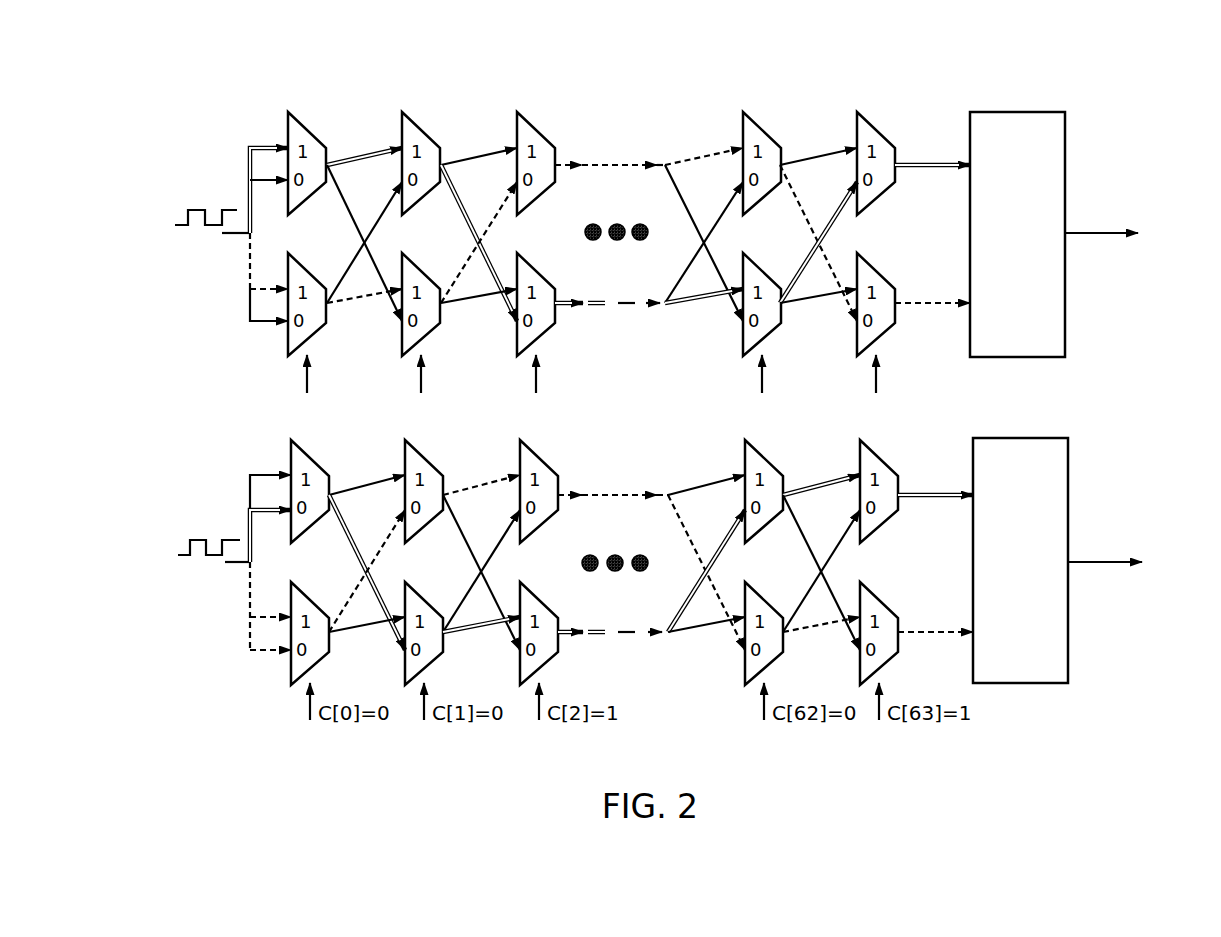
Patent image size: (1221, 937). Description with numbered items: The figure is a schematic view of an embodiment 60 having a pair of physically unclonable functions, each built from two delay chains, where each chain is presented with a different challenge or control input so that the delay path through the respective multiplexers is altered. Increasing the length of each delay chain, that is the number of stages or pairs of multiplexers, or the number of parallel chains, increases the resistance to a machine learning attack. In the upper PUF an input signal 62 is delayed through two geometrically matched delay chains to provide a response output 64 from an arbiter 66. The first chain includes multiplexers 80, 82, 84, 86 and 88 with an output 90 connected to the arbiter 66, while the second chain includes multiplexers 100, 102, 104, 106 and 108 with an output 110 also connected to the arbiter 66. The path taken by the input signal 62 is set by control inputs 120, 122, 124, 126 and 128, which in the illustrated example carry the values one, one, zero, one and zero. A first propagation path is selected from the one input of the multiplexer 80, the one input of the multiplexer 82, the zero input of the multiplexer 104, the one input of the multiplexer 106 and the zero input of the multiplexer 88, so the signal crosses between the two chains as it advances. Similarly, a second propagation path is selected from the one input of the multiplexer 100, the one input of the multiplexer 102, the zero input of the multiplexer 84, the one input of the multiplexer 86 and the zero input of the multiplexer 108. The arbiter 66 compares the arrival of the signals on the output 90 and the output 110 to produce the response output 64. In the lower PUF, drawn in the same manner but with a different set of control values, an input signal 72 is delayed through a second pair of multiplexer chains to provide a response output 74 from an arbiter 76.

The embodiment 60 is at (726, 33).
The input signal 62 is at (212, 237).
The response output 64 is at (1115, 234).
The arbiter 66 is at (1017, 234).
The input signal 72 is at (214, 566).
The response output 74 is at (1119, 561).
The arbiter 76 is at (1020, 560).
The multiplexer 80 is at (323, 170).
The multiplexer 82 is at (437, 170).
The multiplexer 84 is at (552, 170).
The multiplexer 86 is at (778, 170).
The multiplexer 88 is at (892, 170).
The output 90 is at (932, 148).
The multiplexer 100 is at (326, 310).
The multiplexer 102 is at (440, 310).
The multiplexer 104 is at (555, 310).
The multiplexer 106 is at (781, 310).
The multiplexer 108 is at (895, 310).
The output 110 is at (932, 287).
The control input 120 is at (327, 390).
The control input 122 is at (441, 390).
The control input 124 is at (556, 390).
The control input 126 is at (789, 390).
The control input 128 is at (903, 390).